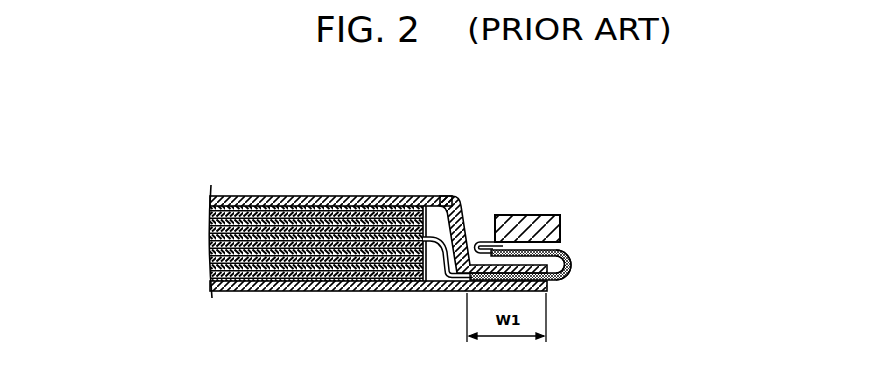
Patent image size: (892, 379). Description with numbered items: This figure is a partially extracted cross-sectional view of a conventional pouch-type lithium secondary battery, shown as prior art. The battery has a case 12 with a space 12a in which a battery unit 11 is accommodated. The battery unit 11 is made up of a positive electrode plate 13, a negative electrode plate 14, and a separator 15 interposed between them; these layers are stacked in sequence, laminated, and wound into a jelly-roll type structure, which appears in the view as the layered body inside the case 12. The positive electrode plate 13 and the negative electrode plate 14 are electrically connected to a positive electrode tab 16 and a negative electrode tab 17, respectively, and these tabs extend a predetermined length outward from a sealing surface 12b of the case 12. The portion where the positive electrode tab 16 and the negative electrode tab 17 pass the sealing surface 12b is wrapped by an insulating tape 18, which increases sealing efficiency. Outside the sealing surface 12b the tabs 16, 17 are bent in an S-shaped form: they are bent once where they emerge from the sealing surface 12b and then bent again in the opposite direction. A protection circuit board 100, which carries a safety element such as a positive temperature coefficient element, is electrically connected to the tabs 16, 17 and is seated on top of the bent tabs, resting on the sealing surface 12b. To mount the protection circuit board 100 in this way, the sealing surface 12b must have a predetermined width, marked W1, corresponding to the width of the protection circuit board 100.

The battery unit 11 is at (397, 140).
The case 12 is at (277, 197).
The positive electrode plate 13 is at (335, 197).
The negative electrode plate 14 is at (392, 197).
The separator 15 is at (363, 197).
The space 12a is at (440, 212).
The sealing surface 12b is at (472, 247).
The protection circuit board 100 is at (532, 215).
The positive electrode tab 16 is at (503, 245).
The negative electrode tab 17 is at (520, 265).
The insulating tape 18 is at (567, 277).